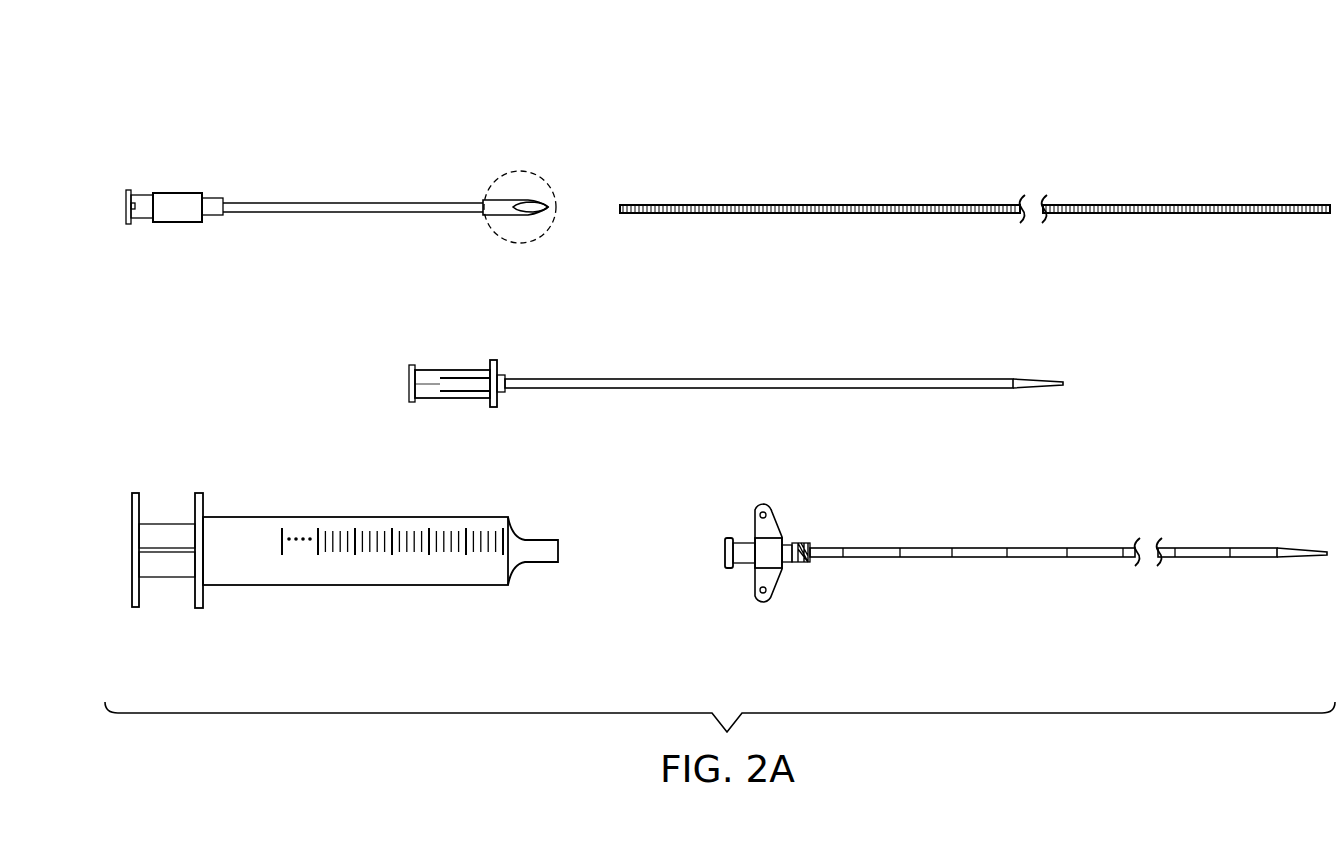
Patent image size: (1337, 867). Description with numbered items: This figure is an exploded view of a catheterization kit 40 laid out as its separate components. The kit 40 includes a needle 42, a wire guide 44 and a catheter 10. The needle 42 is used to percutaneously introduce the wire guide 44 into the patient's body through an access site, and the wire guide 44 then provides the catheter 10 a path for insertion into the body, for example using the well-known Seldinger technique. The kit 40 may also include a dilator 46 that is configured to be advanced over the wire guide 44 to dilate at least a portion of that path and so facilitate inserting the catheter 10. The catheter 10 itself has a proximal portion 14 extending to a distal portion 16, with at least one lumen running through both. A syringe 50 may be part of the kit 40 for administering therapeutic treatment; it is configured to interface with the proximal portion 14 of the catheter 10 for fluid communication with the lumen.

The kit 40 is at (921, 100).
The needle 42 is at (319, 202).
The wire guide 44 is at (769, 205).
The dilator 46 is at (728, 380).
The syringe 50 is at (347, 522).
The catheter 10 is at (1026, 559).
The proximal portion 14 is at (827, 552).
The distal portion 16 is at (1242, 552).